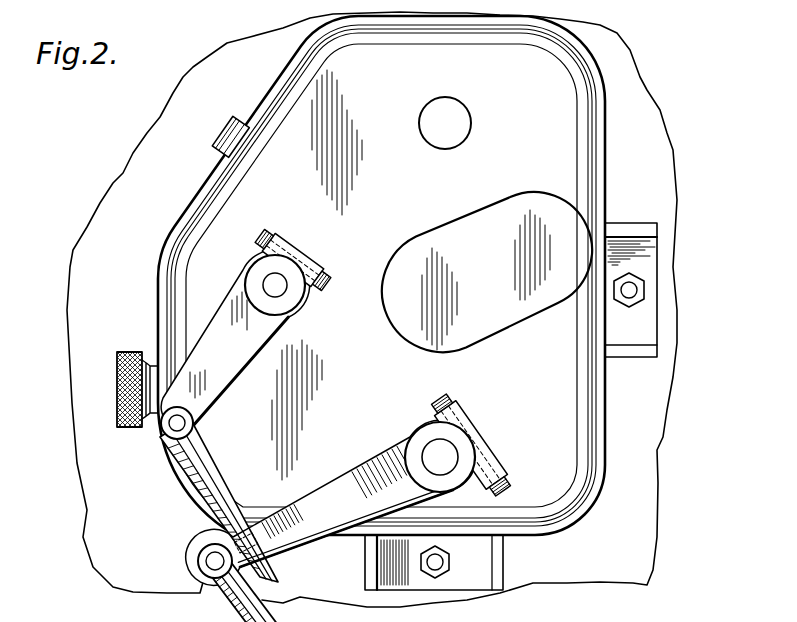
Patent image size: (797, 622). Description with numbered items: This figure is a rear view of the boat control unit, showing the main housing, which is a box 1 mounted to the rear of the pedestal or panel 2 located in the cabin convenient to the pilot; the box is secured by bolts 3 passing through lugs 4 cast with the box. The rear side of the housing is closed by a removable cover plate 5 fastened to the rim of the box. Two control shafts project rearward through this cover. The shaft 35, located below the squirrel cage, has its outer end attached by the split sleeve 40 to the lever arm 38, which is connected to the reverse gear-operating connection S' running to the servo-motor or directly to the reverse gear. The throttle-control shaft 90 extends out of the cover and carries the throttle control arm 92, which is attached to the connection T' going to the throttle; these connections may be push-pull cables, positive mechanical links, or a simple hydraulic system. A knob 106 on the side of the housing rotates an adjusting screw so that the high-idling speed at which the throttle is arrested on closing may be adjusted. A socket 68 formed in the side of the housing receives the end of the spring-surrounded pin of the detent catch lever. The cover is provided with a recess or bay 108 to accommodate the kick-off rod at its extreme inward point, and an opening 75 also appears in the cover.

The box 1 is at (590, 149).
The pedestal or panel 2 is at (647, 470).
The bolts 3 is at (630, 286).
The lugs 4 is at (634, 222).
The removable cover plate 5 is at (604, 416).
The shaft 35 is at (449, 455).
The lever arm 38 is at (360, 466).
The split sleeve 40 is at (471, 415).
The socket 68 is at (233, 124).
The opening 75 is at (467, 121).
The throttle-control shaft 90 is at (281, 281).
The throttle control arm 92 is at (248, 356).
The knob 106 is at (130, 351).
The recess or bay 108 is at (512, 192).
The connection to the throttle T' is at (219, 494).
The connection to the servo-motor S' is at (245, 583).